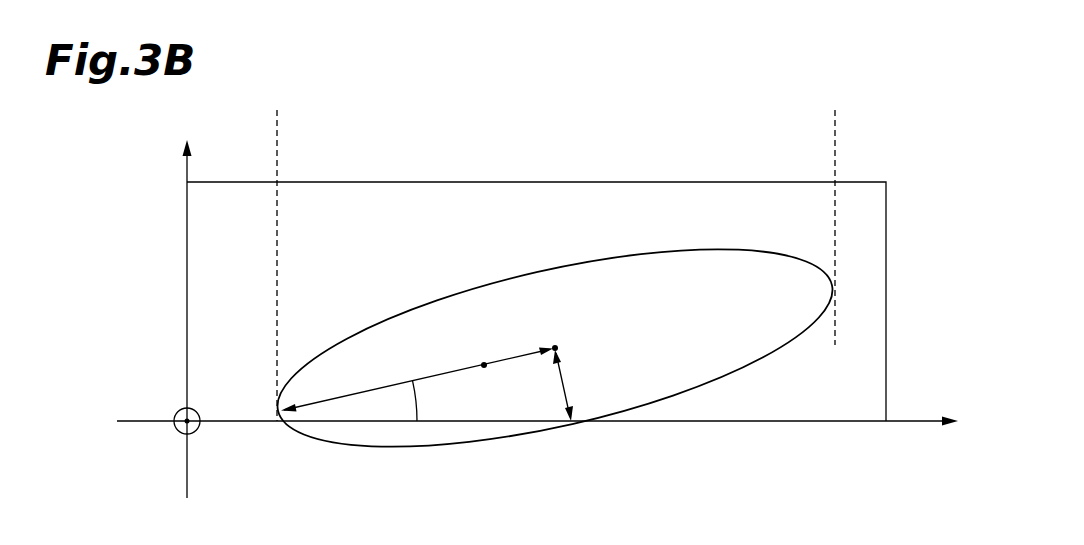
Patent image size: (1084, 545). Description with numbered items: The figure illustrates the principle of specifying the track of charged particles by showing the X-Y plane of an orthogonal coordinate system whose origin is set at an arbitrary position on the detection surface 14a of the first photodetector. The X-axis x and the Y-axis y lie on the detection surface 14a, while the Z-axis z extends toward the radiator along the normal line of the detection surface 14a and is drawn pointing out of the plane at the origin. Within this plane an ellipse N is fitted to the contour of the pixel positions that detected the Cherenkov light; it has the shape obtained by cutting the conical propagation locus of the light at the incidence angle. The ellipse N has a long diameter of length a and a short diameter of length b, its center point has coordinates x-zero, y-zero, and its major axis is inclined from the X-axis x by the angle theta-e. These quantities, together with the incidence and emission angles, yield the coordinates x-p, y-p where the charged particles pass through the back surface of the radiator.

The detection surface 14a is at (868, 249).
The ellipse N is at (555, 348).
The length of the long diameter a is at (417, 380).
The length of the short diameter b is at (572, 385).
The X-axis x is at (537, 440).
The Y-axis y is at (175, 319).
The Z-axis z is at (177, 414).